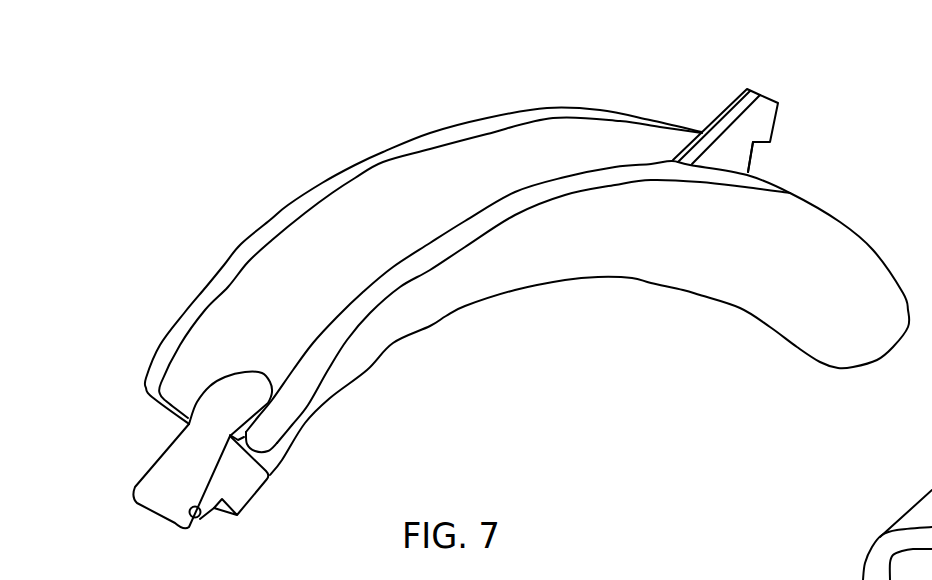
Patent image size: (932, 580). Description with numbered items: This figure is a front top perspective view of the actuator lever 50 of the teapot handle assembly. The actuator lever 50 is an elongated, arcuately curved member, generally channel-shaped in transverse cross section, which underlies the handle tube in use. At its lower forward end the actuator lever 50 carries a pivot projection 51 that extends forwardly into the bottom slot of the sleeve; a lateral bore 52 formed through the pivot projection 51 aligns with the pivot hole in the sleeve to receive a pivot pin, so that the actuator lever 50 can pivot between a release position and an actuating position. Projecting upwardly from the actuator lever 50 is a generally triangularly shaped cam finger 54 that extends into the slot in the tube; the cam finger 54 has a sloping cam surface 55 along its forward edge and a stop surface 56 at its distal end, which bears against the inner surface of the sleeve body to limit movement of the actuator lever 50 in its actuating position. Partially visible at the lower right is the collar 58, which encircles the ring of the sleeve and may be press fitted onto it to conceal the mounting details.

The actuator lever 50 is at (339, 112).
The pivot projection 51 is at (180, 461).
The lateral bore 52 is at (197, 518).
The cam finger 54 is at (737, 160).
The cam surface 55 is at (723, 122).
The stop surface 56 is at (770, 113).
The collar 58 is at (931, 490).